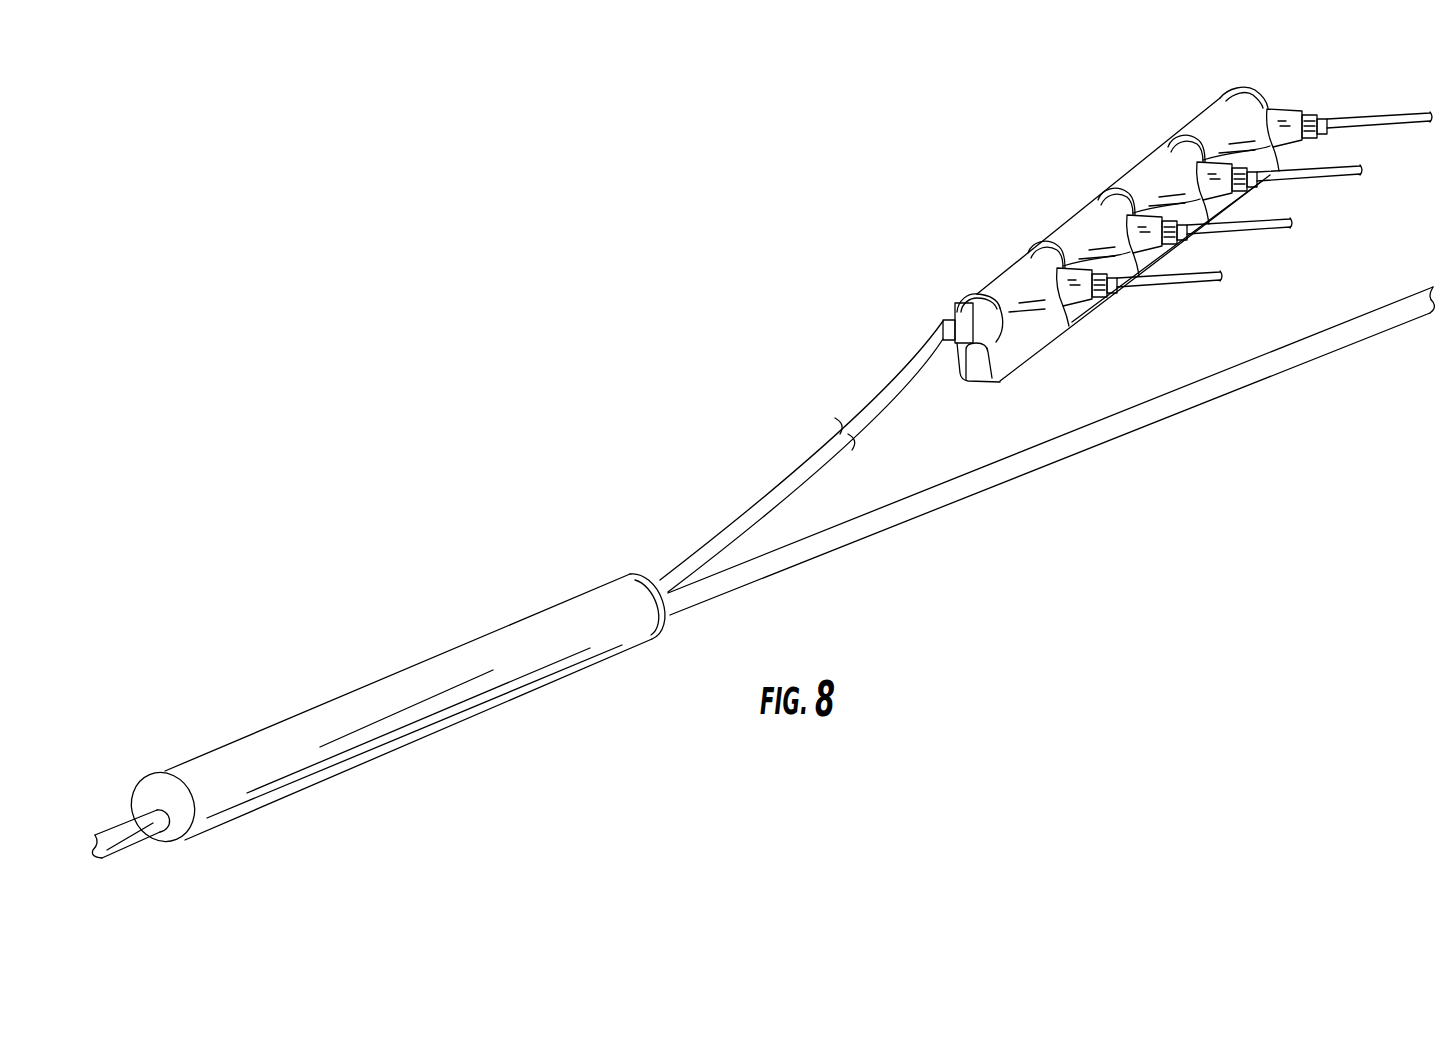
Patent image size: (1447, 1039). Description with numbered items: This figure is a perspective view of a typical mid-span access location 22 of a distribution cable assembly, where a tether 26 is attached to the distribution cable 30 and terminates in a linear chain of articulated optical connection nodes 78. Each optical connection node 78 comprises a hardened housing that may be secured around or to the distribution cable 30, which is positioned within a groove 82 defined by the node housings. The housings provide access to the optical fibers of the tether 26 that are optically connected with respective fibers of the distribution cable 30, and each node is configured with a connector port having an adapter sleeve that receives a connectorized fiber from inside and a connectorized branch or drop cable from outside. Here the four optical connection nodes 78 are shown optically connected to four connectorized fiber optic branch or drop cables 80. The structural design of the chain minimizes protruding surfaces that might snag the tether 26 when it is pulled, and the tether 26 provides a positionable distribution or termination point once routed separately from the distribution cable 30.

The mid-span access location 22 is at (155, 867).
The tether 26 is at (877, 400).
The distribution cable 30 is at (107, 833).
The optical connection node 78 is at (1166, 211).
The connectorized fiber optic branch or drop cable 80 is at (1270, 107).
The groove 82 is at (977, 374).